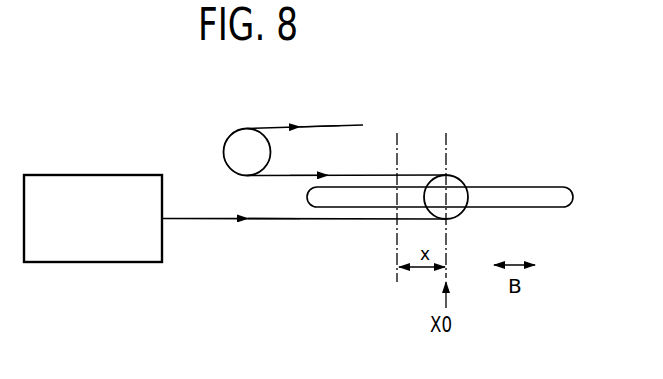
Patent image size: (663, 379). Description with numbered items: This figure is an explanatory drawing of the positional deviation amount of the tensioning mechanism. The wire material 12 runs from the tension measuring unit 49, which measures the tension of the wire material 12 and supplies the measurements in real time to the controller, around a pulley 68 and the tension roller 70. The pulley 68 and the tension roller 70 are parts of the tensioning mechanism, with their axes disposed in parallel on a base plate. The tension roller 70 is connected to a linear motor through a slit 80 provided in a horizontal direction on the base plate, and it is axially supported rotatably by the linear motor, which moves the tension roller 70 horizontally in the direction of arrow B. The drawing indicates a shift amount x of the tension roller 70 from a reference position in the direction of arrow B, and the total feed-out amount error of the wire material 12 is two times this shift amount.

The tension measuring unit 49 is at (125, 175).
The wire material 12 is at (185, 217).
The pulley 68 is at (240, 148).
The tension roller 70 is at (452, 186).
The slit 80 is at (527, 190).